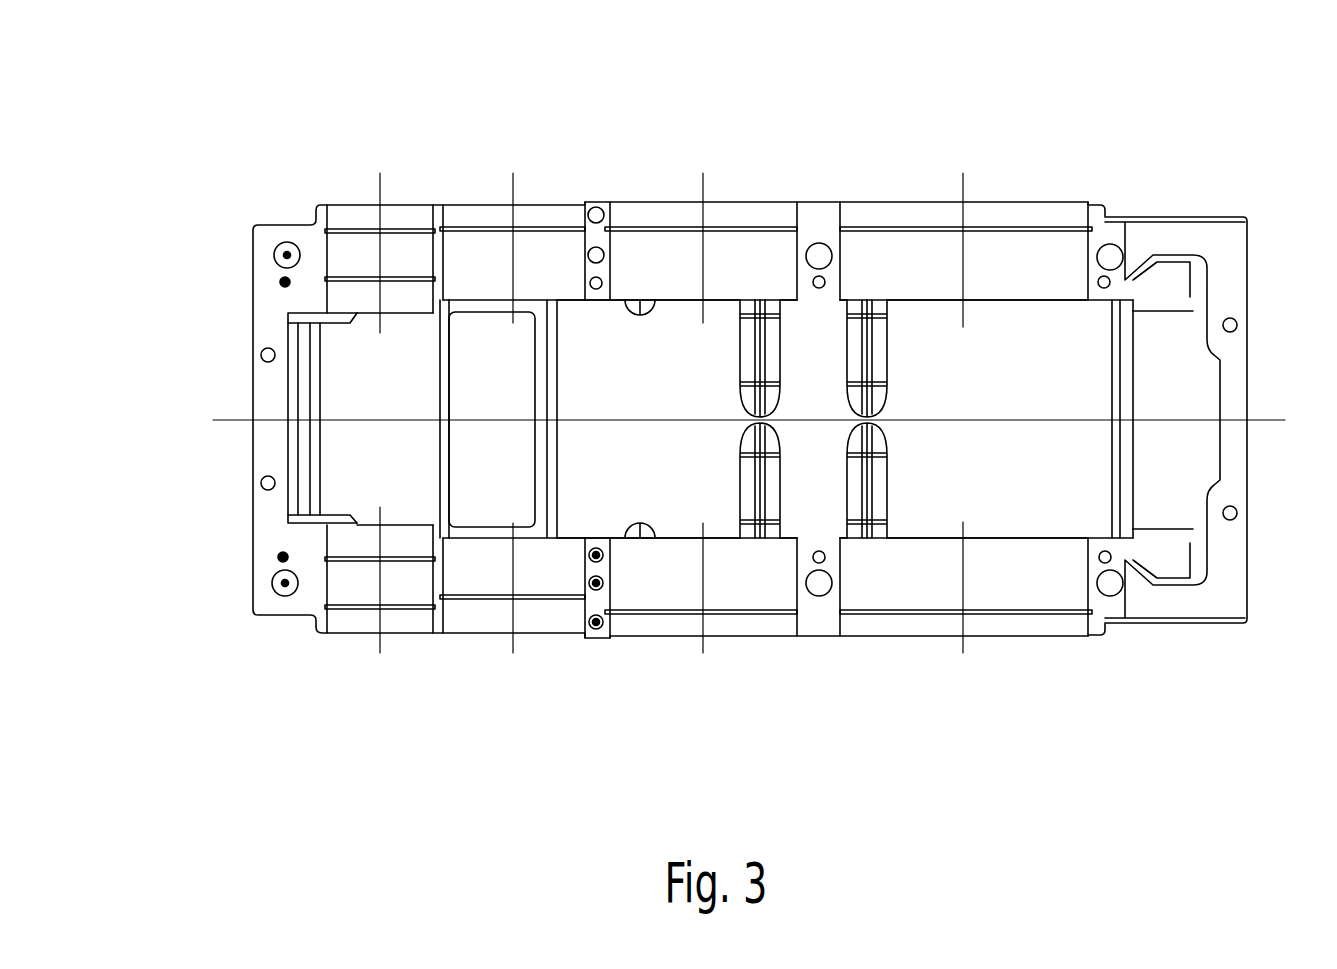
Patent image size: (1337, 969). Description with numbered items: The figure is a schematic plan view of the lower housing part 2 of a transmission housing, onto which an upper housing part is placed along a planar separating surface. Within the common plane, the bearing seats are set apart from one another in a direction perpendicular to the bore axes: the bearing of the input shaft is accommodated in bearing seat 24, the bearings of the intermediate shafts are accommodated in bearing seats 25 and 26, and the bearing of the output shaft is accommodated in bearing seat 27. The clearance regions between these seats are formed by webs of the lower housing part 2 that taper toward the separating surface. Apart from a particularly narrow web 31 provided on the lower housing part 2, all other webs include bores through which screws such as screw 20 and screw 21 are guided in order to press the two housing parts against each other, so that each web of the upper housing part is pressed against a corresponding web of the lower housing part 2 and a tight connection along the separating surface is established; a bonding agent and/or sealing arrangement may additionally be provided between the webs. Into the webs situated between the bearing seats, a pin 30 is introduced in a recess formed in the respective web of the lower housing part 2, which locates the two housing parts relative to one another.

The lower housing part 2 is at (1224, 254).
The screw 20 is at (287, 255).
The screw 21 is at (597, 622).
The bearing seat 24 is at (408, 588).
The bearing seat 25 is at (500, 257).
The bearing seat 26 is at (764, 251).
The bearing seat 27 is at (1025, 582).
The pin 30 is at (285, 282).
The web 31 is at (428, 238).